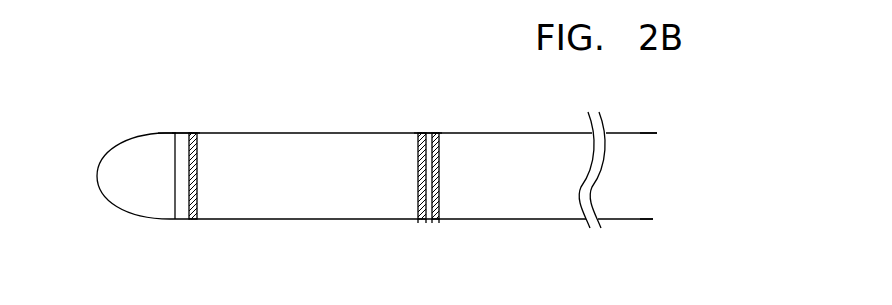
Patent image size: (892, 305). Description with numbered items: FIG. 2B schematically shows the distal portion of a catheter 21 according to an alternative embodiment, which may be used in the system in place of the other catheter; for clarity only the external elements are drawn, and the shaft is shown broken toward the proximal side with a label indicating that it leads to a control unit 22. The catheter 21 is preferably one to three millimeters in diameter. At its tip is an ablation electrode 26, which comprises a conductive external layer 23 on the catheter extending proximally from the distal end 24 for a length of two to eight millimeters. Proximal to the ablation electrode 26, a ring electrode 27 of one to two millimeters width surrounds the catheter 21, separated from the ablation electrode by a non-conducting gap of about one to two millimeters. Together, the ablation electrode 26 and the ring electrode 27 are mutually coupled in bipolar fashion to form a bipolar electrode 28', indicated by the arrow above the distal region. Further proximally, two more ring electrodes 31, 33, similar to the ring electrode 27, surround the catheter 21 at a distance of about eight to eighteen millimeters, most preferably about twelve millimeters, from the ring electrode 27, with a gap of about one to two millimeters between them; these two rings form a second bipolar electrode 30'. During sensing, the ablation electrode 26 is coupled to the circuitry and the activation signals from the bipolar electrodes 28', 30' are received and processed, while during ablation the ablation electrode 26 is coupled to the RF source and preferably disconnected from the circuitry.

The catheter 21 is at (468, 135).
The control unit 22 is at (697, 174).
The conductive external layer 23 is at (161, 194).
The distal end 24 is at (97, 172).
The ablation electrode 26 is at (160, 133).
The ring electrode 27 is at (193, 133).
The bipolar electrode 28' is at (208, 78).
The second bipolar electrode 30' is at (445, 87).
The ring electrode 31 is at (422, 221).
The ring electrode 33 is at (430, 221).